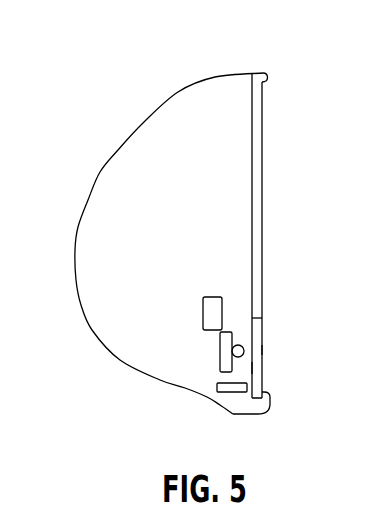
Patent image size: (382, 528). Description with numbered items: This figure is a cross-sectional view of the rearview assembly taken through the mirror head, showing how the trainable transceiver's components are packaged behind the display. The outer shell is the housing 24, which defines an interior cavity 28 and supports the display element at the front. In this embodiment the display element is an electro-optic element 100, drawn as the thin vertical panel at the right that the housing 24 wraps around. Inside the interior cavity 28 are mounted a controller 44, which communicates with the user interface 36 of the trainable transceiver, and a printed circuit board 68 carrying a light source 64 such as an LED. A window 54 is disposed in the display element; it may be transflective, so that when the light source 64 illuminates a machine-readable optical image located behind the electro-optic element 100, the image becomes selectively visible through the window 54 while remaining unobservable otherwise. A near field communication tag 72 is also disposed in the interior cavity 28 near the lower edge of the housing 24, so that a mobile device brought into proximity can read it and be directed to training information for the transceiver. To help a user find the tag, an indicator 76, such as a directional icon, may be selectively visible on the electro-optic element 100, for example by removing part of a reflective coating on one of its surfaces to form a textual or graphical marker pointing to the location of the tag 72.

The housing 24 is at (178, 92).
The interior cavity 28 is at (105, 282).
The user interface 36 is at (255, 416).
The controller 44 is at (203, 310).
The window 54 is at (263, 350).
The light source 64 is at (238, 345).
The printed circuit board 68 is at (220, 348).
The near field communication (NFC) tag 72 is at (207, 393).
The indicator 76 is at (263, 340).
The electro-optic element 100 is at (257, 268).